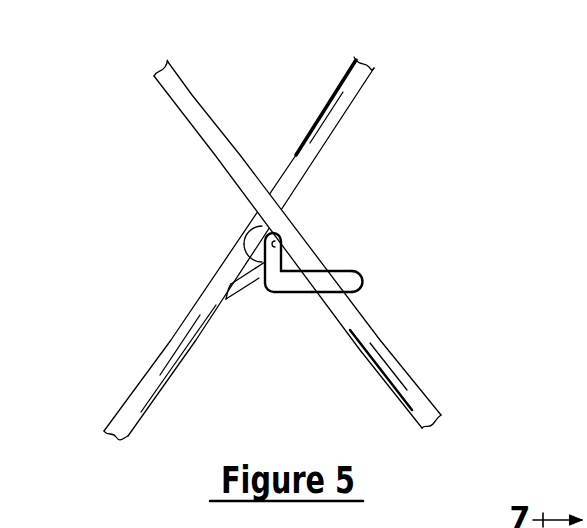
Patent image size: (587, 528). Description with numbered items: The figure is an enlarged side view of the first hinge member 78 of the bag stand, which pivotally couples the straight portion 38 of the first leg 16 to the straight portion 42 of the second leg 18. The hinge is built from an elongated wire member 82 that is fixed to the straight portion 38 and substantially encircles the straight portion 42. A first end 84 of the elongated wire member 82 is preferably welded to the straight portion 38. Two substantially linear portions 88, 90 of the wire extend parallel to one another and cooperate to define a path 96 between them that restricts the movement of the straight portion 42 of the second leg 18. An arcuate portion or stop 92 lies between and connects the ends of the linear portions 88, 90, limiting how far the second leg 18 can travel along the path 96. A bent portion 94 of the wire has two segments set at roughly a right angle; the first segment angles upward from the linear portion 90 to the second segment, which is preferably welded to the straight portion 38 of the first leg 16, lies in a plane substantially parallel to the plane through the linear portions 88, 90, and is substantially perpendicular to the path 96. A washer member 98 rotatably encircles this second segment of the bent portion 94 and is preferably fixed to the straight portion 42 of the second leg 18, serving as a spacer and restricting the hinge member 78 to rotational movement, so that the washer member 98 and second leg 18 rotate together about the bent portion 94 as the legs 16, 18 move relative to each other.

The first leg 16 is at (399, 70).
The second leg 18 is at (216, 74).
The straight portion 38 is at (338, 103).
The straight portion 42 is at (153, 76).
The first hinge member 78 is at (260, 247).
The elongated wire member 82 is at (349, 262).
The first end 84 is at (226, 302).
The linear portion 88 is at (284, 264).
The linear portion 90 is at (298, 295).
The arcuate portion 92 is at (362, 285).
The bent portion 94 is at (250, 243).
The path 96 is at (305, 268).
The washer member 98 is at (261, 226).